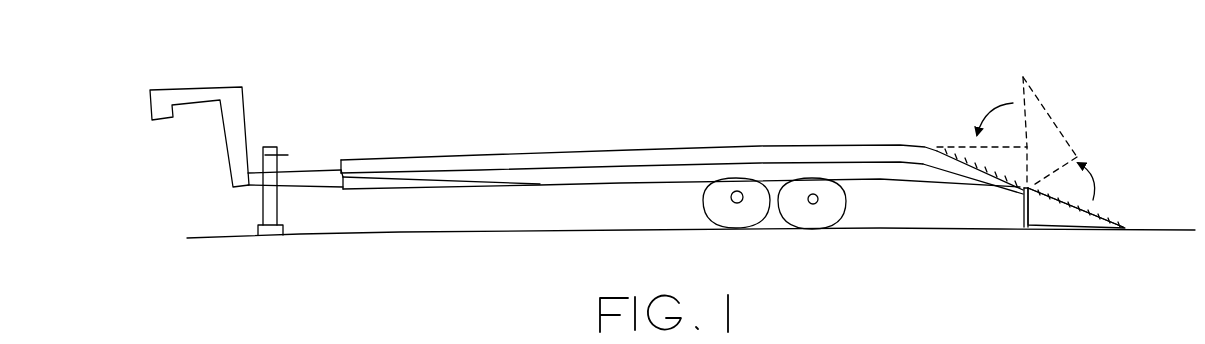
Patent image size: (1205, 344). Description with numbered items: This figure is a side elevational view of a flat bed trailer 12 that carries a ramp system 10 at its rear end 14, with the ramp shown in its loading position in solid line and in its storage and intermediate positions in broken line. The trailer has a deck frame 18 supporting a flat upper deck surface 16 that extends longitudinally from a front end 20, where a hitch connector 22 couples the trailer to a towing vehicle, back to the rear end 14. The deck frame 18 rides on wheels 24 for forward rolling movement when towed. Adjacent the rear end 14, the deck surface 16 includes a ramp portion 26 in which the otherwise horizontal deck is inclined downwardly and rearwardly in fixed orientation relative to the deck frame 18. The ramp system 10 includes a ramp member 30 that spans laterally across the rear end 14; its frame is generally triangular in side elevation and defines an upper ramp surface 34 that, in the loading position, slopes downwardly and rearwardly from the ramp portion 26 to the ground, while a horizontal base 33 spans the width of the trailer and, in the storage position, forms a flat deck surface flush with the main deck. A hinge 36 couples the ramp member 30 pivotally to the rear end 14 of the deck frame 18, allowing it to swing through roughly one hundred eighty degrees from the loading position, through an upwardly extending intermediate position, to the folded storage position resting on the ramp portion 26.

The ramp system 10 is at (1045, 53).
The flat bed trailer 12 is at (567, 137).
The rear end 14 is at (1023, 197).
The flat upper deck surface 16 is at (688, 145).
The deck frame 18 is at (518, 178).
The front end 20 is at (333, 160).
The hitch connector 22 is at (198, 92).
The wheels 24 is at (747, 217).
The ramp portion 26 is at (952, 165).
The ramp member 30 is at (1070, 217).
The base 33 is at (963, 147).
The upper ramp surface 34 is at (1100, 212).
The hinge 36 is at (1023, 183).